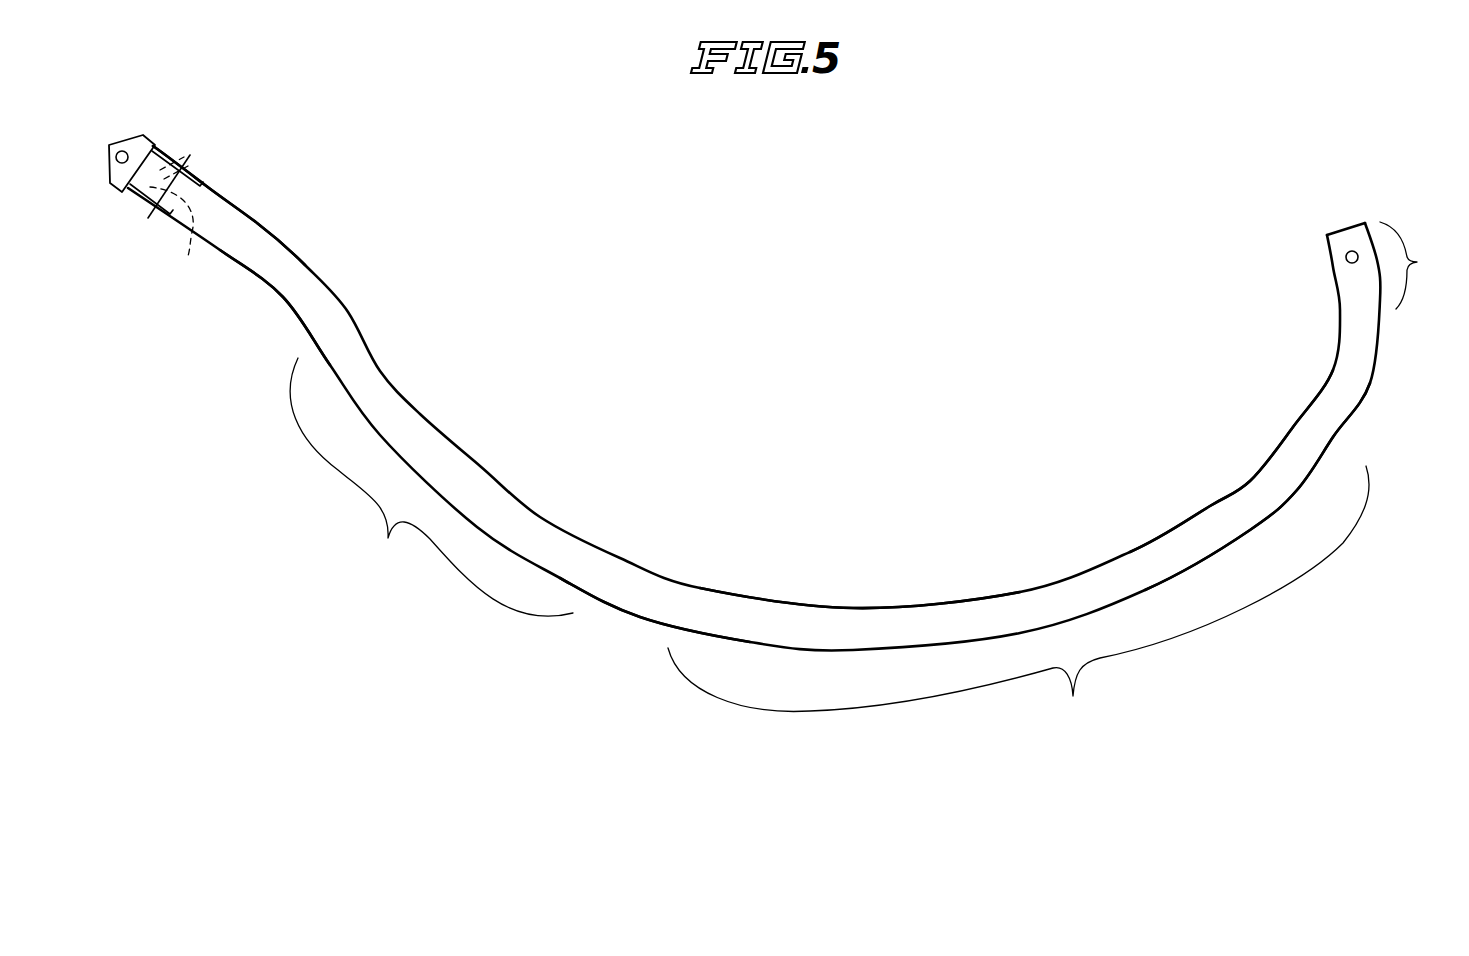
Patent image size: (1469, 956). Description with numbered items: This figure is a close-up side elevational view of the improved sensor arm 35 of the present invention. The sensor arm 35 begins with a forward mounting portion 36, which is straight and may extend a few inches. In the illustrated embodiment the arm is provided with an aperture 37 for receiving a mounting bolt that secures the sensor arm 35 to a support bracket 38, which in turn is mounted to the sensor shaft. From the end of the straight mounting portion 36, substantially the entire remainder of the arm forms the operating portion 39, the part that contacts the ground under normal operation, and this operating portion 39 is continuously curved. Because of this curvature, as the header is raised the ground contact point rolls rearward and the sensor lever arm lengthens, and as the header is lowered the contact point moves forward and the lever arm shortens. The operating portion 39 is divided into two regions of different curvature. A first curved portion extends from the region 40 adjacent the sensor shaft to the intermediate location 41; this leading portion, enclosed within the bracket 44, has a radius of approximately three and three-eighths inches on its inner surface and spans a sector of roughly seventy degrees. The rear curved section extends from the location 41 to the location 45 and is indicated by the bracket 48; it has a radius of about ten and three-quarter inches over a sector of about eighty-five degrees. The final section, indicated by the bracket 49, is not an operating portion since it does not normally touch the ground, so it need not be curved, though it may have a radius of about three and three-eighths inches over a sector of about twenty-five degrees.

The sensor arm 35 is at (423, 398).
The forward mounting portion 36 is at (260, 221).
The aperture 37 is at (172, 220).
The support bracket 38 is at (168, 151).
The operating portion 39 is at (816, 598).
The region adjacent the sensor shaft 40 is at (284, 299).
The intermediate location 41 is at (619, 612).
The bracket 44 is at (431, 487).
The location 45 is at (1318, 378).
The bracket 48 is at (1018, 597).
The bracket 49 is at (1418, 265).